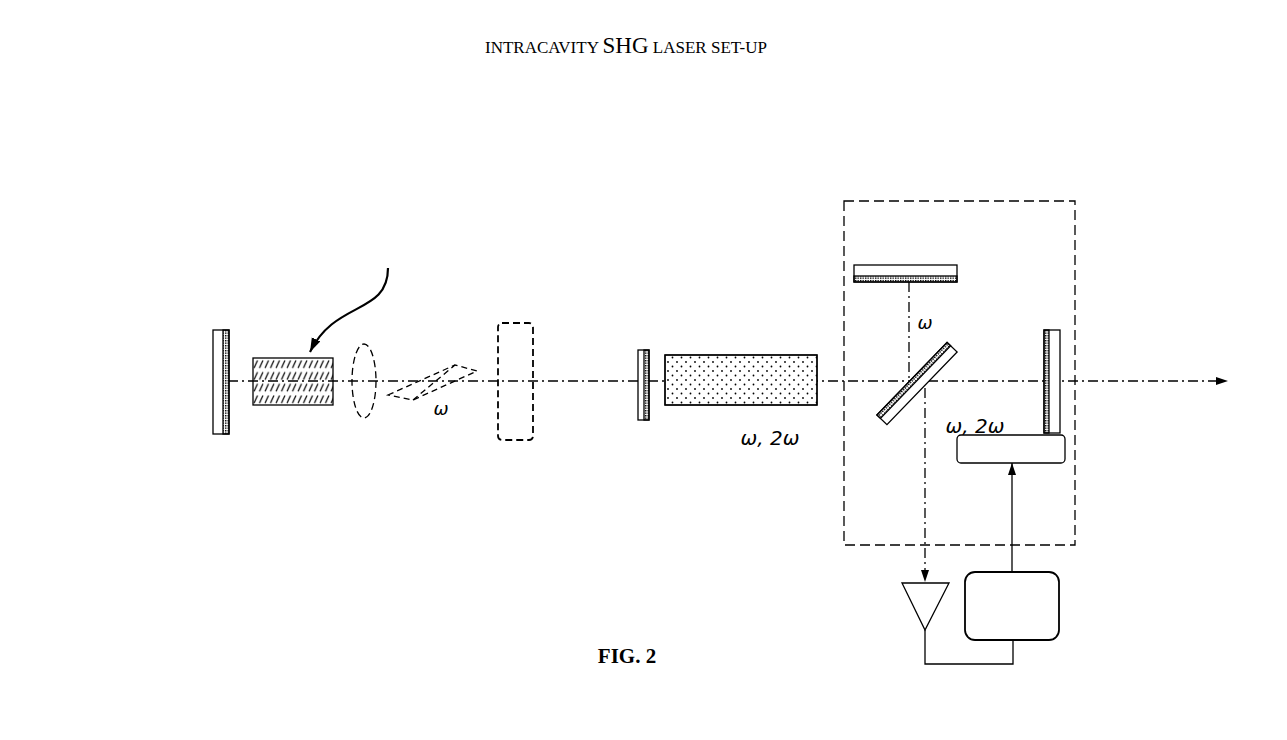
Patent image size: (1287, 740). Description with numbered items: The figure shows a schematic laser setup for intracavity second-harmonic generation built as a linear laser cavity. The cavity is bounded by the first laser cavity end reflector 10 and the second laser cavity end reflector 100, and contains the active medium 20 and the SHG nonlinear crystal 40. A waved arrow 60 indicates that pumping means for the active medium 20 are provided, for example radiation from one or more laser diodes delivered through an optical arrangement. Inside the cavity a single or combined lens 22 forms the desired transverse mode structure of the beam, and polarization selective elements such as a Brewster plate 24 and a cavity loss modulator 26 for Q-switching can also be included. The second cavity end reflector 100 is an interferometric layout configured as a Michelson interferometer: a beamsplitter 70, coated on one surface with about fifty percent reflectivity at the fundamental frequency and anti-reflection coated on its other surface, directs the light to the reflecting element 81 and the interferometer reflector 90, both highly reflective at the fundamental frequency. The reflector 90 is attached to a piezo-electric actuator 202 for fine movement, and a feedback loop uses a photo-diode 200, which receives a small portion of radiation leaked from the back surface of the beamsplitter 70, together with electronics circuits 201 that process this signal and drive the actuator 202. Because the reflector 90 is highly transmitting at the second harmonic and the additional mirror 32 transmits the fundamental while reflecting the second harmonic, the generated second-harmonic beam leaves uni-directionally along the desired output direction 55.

The first laser cavity end reflector 10 is at (213, 390).
The active medium 20 is at (298, 405).
The lens 22 is at (373, 365).
The Brewster plate 24 is at (418, 405).
The cavity loss modulator 26 is at (525, 443).
The additional mirror 32 is at (649, 408).
The SHG nonlinear crystal 40 is at (803, 355).
The output direction 55 is at (1178, 372).
The waved arrow 60 is at (338, 307).
The beamsplitter 70 is at (923, 388).
The reflecting element 81 is at (922, 277).
The interferometer reflector 90 is at (1048, 423).
The second laser cavity end reflector 100 is at (1034, 517).
The photo-diode 200 is at (945, 623).
The electronics circuits 201 is at (1012, 606).
The piezo-electric actuator 202 is at (1048, 463).